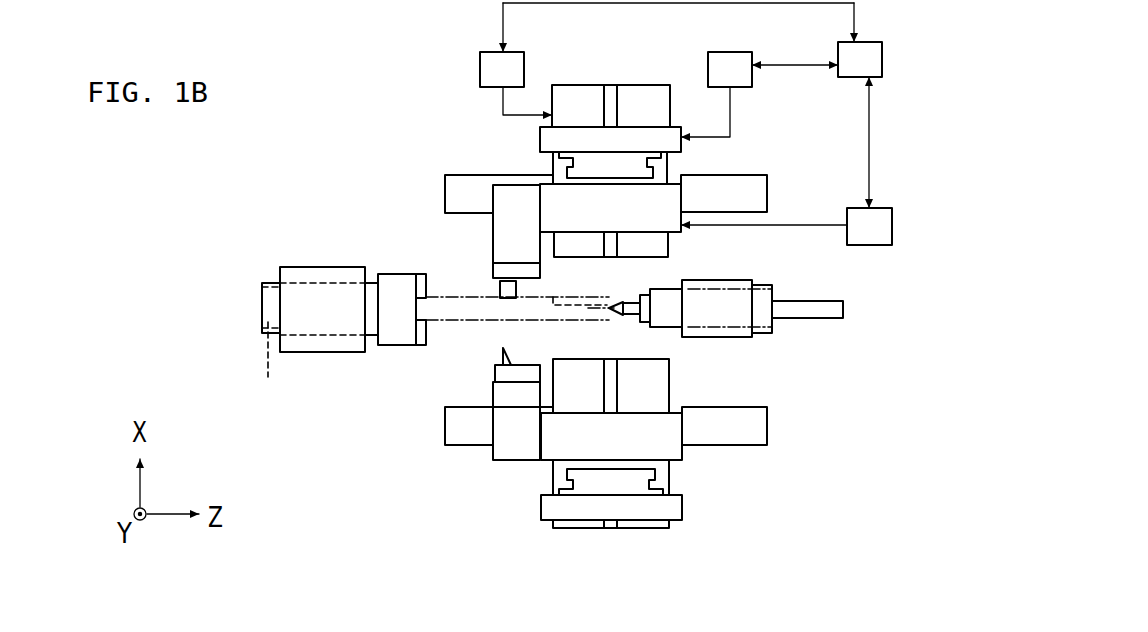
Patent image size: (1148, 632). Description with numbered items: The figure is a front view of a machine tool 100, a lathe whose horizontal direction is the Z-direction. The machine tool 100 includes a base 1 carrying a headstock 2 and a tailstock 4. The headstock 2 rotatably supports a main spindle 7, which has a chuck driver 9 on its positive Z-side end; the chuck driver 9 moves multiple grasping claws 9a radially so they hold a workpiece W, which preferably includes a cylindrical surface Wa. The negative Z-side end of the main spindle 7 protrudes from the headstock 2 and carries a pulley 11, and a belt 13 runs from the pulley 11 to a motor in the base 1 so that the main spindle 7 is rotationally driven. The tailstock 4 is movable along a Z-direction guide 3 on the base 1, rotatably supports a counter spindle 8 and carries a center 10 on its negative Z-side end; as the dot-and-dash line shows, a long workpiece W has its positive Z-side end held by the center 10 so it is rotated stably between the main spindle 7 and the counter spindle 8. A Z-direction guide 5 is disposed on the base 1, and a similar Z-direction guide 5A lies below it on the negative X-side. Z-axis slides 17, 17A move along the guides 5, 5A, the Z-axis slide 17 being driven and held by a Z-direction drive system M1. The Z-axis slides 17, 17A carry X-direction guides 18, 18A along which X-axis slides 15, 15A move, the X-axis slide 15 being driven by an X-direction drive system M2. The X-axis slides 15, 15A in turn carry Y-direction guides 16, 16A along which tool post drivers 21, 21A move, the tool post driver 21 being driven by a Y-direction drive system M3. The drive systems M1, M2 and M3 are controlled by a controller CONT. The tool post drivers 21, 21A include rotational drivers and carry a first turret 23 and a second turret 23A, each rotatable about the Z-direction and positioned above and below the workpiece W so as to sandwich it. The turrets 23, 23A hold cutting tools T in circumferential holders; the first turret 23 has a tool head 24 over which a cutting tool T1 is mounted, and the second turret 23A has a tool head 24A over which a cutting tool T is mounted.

The machine tool 100 is at (332, 65).
The base 1 is at (437, 130).
The headstock 2 is at (310, 272).
The Z-direction guide 3 is at (840, 309).
The tailstock 4 is at (715, 285).
The Z-direction guide 5 is at (758, 195).
The Z-direction guide 5A is at (767, 427).
The main spindle 7 is at (372, 287).
The counter spindle 8 is at (672, 321).
The chuck driver 9 is at (398, 282).
The grasping claws 9a is at (418, 346).
The center 10 is at (628, 317).
The pulley 11 is at (267, 363).
The belt 13 is at (272, 286).
The X-axis slide 15 is at (658, 136).
The X-axis slide 15A is at (677, 508).
The Y-direction guide 16 is at (629, 160).
The Y-direction guide 16A is at (633, 484).
The Z-axis slide 17 is at (563, 93).
The Z-axis slide 17A is at (562, 526).
The X-direction guide 18 is at (610, 93).
The X-direction guide 18A is at (612, 528).
The tool post driver 21 is at (700, 189).
The tool post driver 21A is at (677, 453).
The first turret 23 is at (507, 190).
The second turret 23A is at (502, 452).
The tool head 24 is at (538, 271).
The tool head 24A is at (505, 376).
The cutting tool T1 is at (500, 288).
The cutting tool T is at (512, 362).
The workpiece W is at (462, 323).
The cylindrical surface Wa is at (483, 321).
The Z-direction drive system M1 is at (667, 59).
The X-direction drive system M2 is at (759, 94).
The Y-direction drive system M3 is at (786, 161).
The controller CONT is at (848, 77).